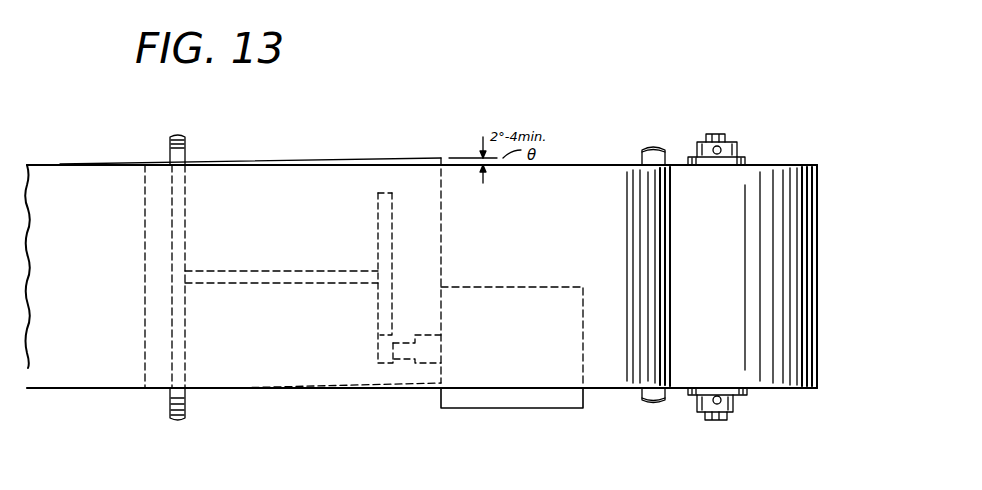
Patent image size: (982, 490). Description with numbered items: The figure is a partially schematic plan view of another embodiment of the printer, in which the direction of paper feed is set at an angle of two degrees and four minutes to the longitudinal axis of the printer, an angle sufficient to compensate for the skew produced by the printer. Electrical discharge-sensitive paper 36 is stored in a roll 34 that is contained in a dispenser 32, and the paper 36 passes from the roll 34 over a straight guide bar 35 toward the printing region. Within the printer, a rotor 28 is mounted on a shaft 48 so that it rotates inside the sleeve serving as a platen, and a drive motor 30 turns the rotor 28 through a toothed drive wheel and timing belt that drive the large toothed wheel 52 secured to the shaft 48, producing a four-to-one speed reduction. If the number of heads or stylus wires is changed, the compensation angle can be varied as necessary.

The rotor 28 is at (186, 404).
The drive motor 30 is at (512, 410).
The dispenser 32 is at (752, 397).
The roll 34 is at (818, 258).
The straight guide bar 35 is at (645, 392).
The electrical discharge-sensitive paper 36 is at (85, 375).
The shaft 48 is at (283, 277).
The large toothed wheel 52 is at (393, 258).